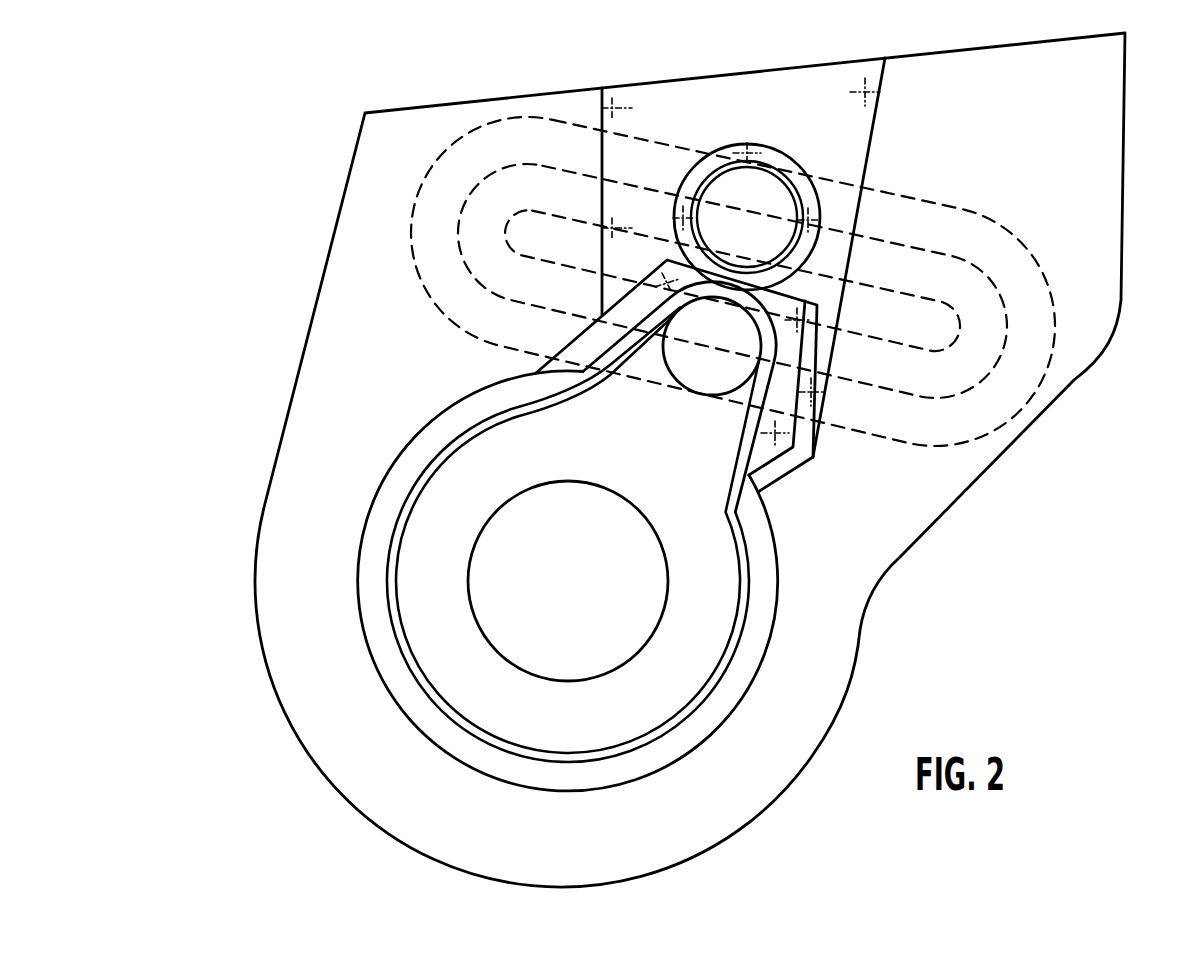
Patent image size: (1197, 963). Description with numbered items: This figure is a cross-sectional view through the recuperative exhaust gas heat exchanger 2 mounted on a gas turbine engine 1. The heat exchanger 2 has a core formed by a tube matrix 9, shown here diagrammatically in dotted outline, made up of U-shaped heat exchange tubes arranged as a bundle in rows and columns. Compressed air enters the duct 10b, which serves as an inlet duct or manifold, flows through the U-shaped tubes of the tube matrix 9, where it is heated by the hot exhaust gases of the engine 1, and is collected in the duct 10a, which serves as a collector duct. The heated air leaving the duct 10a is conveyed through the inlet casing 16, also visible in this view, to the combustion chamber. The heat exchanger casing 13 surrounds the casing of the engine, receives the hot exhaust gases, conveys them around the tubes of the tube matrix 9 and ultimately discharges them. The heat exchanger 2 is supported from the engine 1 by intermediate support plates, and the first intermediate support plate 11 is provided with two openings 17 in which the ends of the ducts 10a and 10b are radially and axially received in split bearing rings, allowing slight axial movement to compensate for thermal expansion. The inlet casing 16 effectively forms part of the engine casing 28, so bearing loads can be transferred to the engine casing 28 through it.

The gas turbine engine 1 is at (773, 565).
The recuperative exhaust gas heat exchanger 2 is at (998, 157).
The tube matrix 9 is at (967, 230).
The collector duct 10a is at (689, 382).
The inlet duct 10b is at (775, 167).
The first intermediate support plate 11 is at (866, 116).
The heat exchanger casing 13 is at (1125, 96).
The inlet casing 16 is at (745, 638).
The openings 17 is at (758, 226).
The engine casing 28 is at (708, 733).